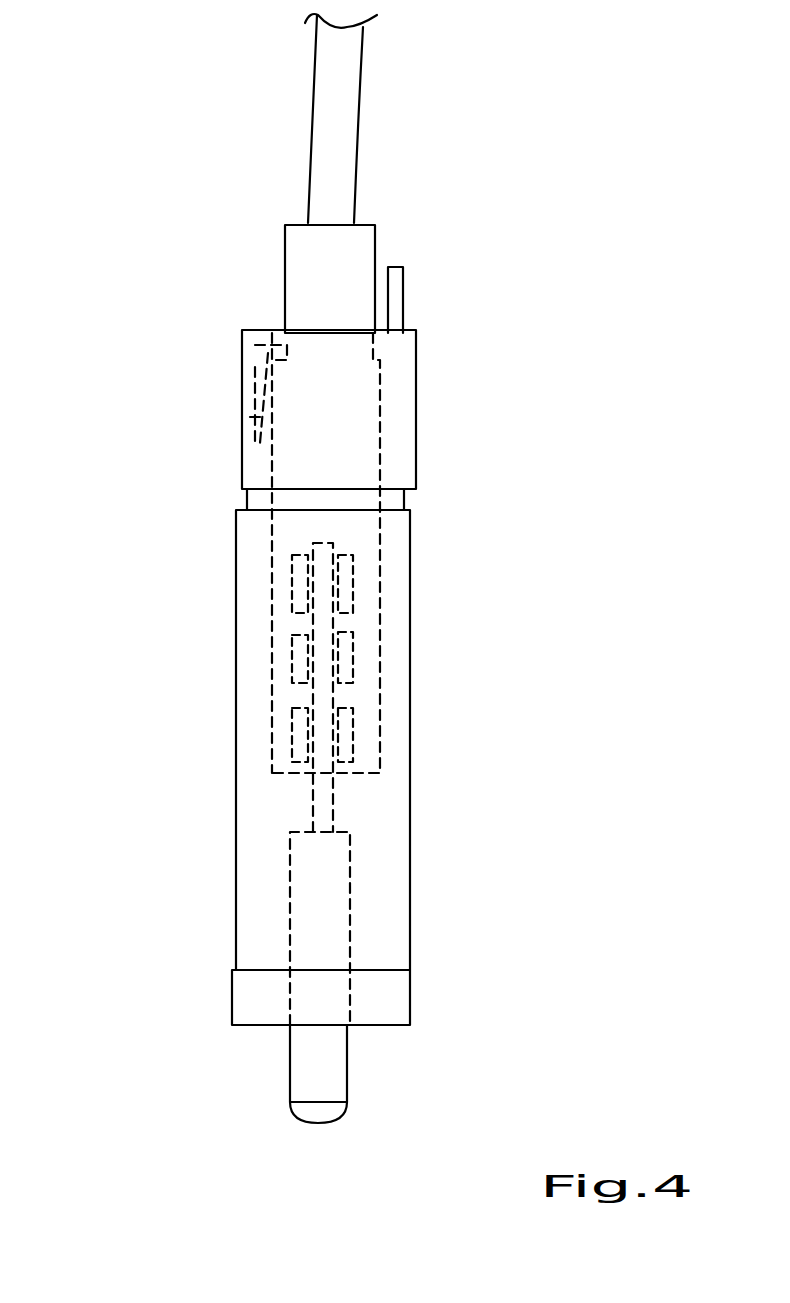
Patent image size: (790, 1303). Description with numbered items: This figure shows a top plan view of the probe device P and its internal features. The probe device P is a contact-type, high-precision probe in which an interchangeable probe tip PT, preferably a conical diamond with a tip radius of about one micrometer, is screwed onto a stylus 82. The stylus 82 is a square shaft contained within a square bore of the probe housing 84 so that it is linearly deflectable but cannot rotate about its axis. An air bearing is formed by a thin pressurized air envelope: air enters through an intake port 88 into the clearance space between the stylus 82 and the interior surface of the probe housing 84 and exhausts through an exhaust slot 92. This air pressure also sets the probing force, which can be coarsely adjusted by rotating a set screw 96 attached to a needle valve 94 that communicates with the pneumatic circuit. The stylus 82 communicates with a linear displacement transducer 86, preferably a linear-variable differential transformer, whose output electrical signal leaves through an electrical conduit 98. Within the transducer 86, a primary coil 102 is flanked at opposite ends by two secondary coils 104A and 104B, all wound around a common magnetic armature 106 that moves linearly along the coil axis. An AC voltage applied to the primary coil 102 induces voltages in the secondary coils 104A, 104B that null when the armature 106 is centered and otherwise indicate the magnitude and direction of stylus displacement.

The electrical conduit 98 is at (360, 88).
The intake port 88 is at (403, 282).
The set screw 96 is at (240, 342).
The needle valve 94 is at (242, 417).
The exhaust slot 92 is at (407, 492).
The linear displacement transducer 86 is at (378, 587).
The probe housing 84 is at (410, 903).
The stylus 82 is at (347, 1070).
The primary coil 102 is at (290, 662).
The secondary coil 104A is at (293, 737).
The secondary coil 104B is at (293, 593).
The armature 106 is at (333, 693).
The probe device P is at (235, 873).
The probe tip PT is at (305, 1124).